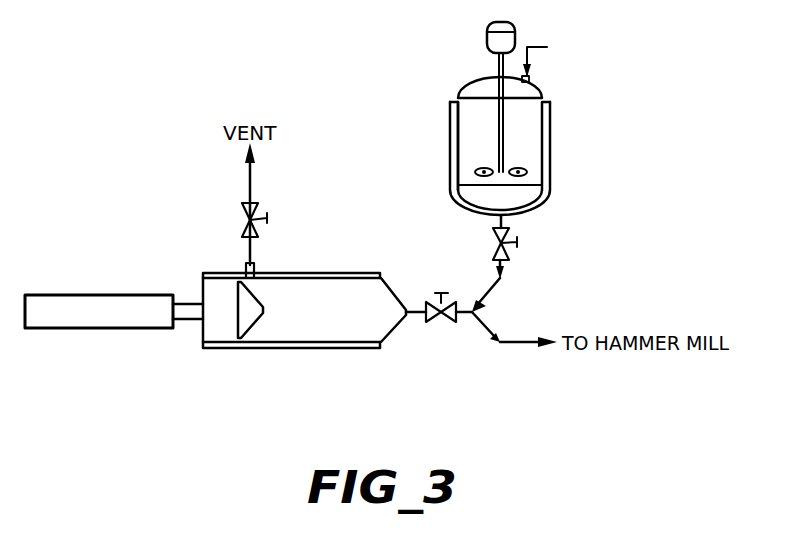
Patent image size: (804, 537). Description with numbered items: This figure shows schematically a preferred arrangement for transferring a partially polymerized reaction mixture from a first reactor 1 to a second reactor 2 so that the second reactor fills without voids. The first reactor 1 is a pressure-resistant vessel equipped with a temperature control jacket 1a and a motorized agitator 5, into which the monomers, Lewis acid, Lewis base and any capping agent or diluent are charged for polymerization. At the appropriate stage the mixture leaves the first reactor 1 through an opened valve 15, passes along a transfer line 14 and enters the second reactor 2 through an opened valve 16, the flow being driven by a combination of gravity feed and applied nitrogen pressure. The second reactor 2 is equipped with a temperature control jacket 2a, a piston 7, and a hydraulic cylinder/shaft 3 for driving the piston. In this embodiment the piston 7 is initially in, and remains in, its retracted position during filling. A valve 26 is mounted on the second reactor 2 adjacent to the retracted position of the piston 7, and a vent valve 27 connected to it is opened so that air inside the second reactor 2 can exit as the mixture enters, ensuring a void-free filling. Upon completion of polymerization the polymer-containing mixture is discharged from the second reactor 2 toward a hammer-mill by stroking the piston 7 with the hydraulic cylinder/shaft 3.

The first reactor 1 is at (521, 125).
The temperature control jacket 1a is at (452, 162).
The second reactor 2 is at (304, 344).
The temperature control jacket 2a is at (298, 345).
The hydraulic cylinder/shaft 3 is at (113, 303).
The motorized agitator 5 is at (487, 40).
The piston 7 is at (225, 310).
The transfer line 14 is at (486, 297).
The valve 15 is at (517, 242).
The valve 16 is at (447, 318).
The valve 26 is at (255, 267).
The vent valve 27 is at (268, 218).